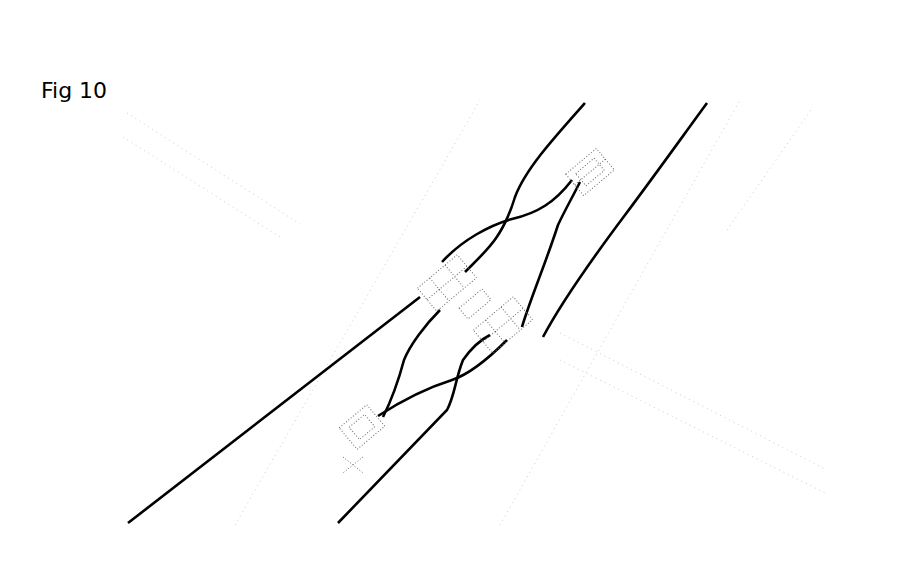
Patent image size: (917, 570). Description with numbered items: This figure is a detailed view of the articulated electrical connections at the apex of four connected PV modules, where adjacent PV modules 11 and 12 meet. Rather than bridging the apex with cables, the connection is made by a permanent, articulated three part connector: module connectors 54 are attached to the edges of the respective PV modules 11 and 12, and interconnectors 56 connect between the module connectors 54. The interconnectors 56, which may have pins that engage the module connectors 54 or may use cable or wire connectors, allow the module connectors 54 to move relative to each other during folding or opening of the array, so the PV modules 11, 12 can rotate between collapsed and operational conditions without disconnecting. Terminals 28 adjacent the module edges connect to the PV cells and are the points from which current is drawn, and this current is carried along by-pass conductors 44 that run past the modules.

The PV module 11 is at (376, 172).
The PV module 12 is at (237, 282).
The terminal 28 is at (365, 433).
The by-pass conductor 44 is at (667, 153).
The module connector 54 is at (455, 272).
The interconnector 56 is at (433, 282).